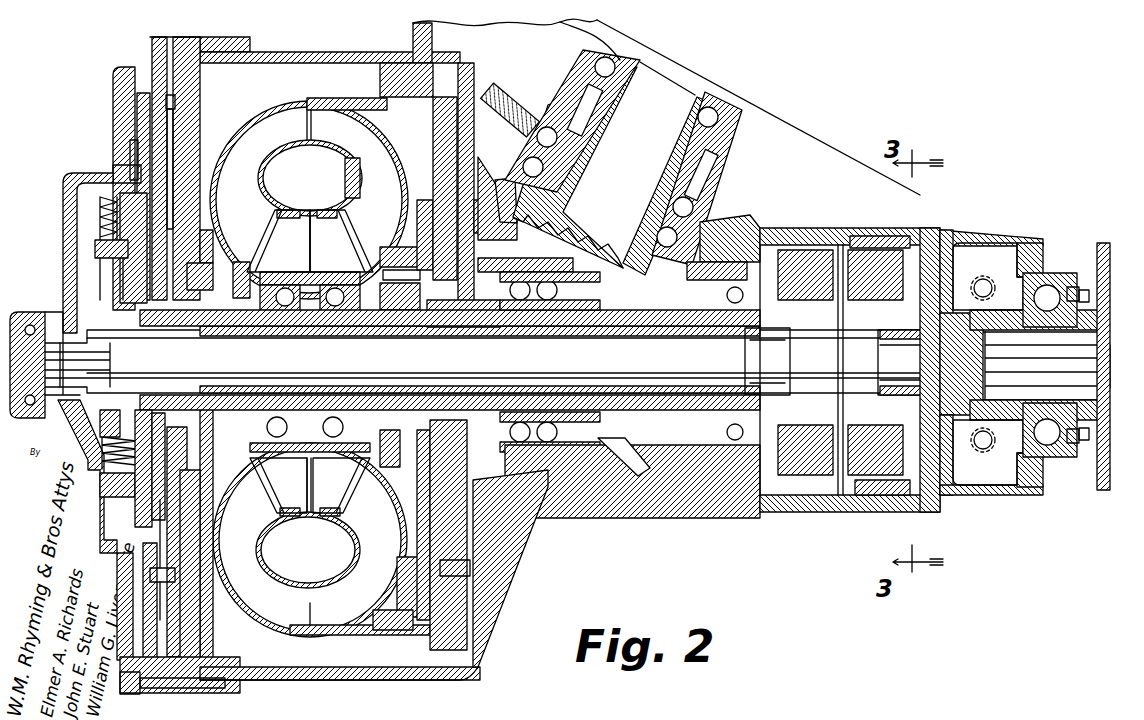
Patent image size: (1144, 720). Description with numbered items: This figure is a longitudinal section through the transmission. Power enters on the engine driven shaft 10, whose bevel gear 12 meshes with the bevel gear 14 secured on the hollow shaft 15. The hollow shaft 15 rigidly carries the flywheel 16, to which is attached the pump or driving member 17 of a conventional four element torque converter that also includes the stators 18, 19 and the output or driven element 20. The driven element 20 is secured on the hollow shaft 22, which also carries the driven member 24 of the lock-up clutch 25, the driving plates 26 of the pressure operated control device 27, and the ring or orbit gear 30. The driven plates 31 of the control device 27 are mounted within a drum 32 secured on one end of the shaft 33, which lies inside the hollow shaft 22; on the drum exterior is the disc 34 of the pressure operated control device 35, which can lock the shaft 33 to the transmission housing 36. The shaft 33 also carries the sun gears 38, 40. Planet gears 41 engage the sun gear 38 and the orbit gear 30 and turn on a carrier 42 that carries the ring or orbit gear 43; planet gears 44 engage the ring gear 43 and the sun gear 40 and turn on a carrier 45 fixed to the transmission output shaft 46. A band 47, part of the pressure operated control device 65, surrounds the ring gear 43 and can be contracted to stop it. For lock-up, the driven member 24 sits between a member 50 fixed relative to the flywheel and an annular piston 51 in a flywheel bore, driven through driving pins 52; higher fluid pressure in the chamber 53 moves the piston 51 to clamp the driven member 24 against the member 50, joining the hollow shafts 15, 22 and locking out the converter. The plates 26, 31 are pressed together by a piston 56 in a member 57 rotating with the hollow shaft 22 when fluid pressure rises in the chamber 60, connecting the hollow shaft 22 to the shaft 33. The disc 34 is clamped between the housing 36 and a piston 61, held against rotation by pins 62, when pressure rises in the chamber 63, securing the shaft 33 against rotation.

The engine driven shaft 10 is at (676, 95).
The bevel gear 12 is at (622, 272).
The bevel gear 14 is at (640, 455).
The hollow shaft 15 is at (592, 430).
The flywheel 16 is at (476, 600).
The pump or driving member 17 is at (272, 120).
The stator 18 is at (292, 150).
The stator 19 is at (320, 150).
The output or driven element 20 is at (346, 176).
The hollow shaft 22 is at (725, 338).
The driven member 24 is at (410, 228).
The lock-up clutch 25 is at (352, 152).
The driving plates 26 is at (106, 228).
The pressure operated control device 27 is at (98, 248).
The ring or orbit gear 30 is at (792, 248).
The driven plates 31 is at (120, 210).
The drum 32 is at (70, 192).
The shaft 33 is at (78, 315).
The pressure operated control device disc 34 is at (133, 152).
The pressure operated control device 35 is at (112, 125).
The transmission housing 36 is at (118, 72).
The sun gear 38 is at (775, 340).
The sun gear 40 is at (893, 362).
The planet gears 41 is at (810, 250).
The carrier 42 is at (850, 250).
The ring or orbit gear 43 is at (872, 496).
The planet gears 44 is at (962, 236).
The carrier 45 is at (980, 288).
The transmission output shaft 46 is at (1098, 370).
The band 47 is at (870, 238).
The member 50 is at (374, 616).
The piston 51 is at (476, 102).
The driving pin 52 is at (472, 568).
The chamber 53 is at (470, 540).
The piston 56 is at (166, 500).
The member 57 is at (130, 174).
The chamber 60 is at (150, 480).
The piston 61 is at (178, 105).
The pin 62 is at (176, 573).
The chamber 63 is at (175, 125).
The pressure operated control device 65 is at (840, 245).